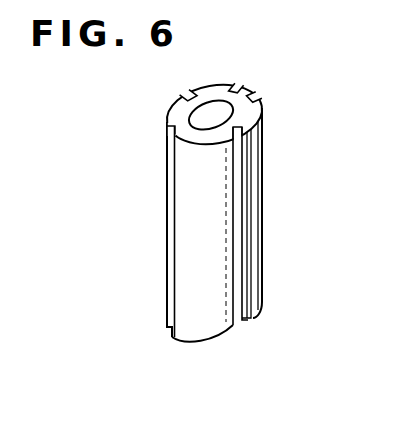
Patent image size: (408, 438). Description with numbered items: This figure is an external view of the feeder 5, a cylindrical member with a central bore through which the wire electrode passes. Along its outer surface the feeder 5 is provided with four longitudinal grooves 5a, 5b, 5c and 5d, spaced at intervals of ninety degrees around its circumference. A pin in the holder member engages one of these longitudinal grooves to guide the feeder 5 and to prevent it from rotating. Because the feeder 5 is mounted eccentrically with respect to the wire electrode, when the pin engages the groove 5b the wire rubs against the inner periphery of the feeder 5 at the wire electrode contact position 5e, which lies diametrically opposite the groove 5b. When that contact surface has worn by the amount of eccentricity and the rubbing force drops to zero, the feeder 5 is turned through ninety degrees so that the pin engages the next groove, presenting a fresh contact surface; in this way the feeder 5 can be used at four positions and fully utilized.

The feeder 5 is at (212, 280).
The longitudinal groove 5a is at (241, 195).
The longitudinal groove 5b is at (167, 217).
The longitudinal groove 5c is at (190, 103).
The longitudinal groove 5d is at (257, 98).
The wire electrode contact position 5e is at (237, 101).